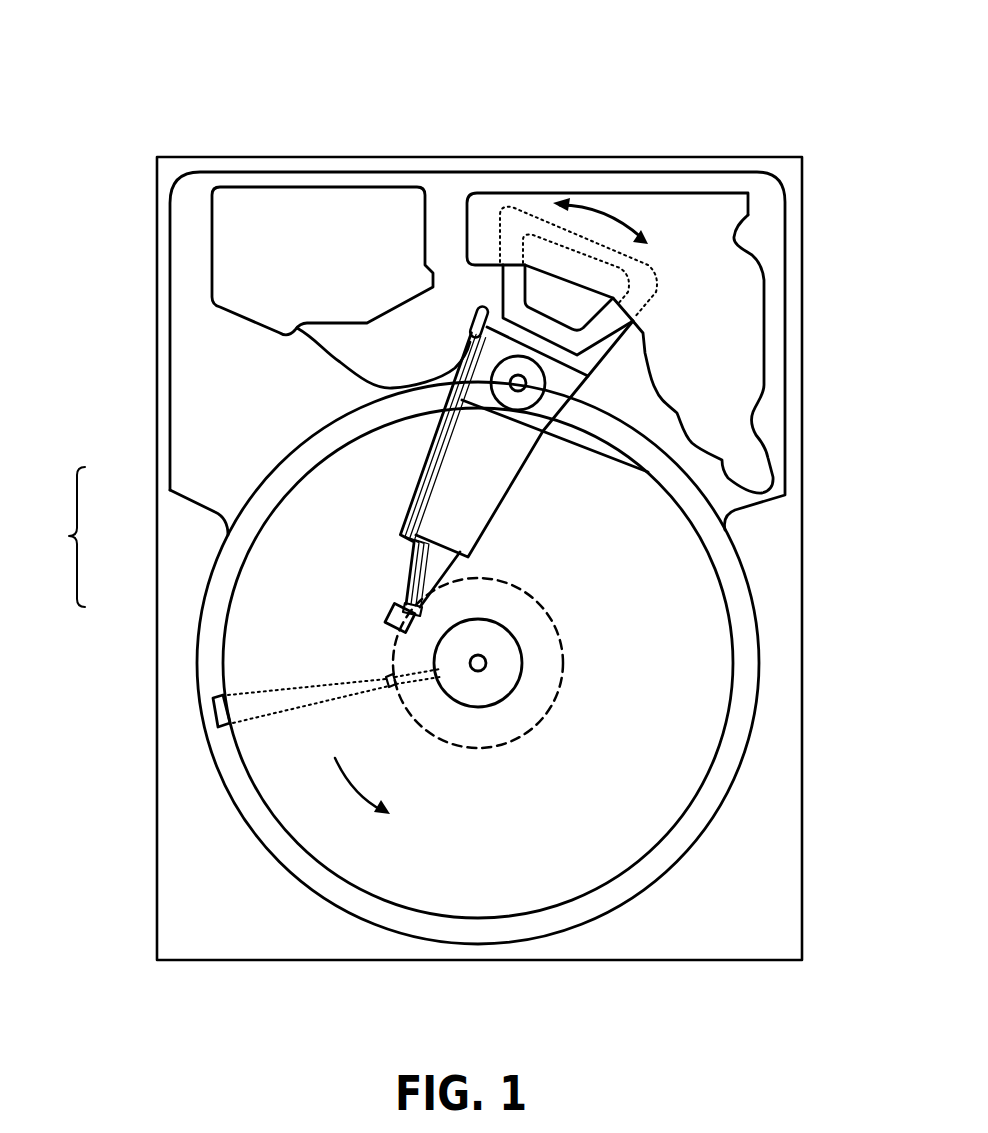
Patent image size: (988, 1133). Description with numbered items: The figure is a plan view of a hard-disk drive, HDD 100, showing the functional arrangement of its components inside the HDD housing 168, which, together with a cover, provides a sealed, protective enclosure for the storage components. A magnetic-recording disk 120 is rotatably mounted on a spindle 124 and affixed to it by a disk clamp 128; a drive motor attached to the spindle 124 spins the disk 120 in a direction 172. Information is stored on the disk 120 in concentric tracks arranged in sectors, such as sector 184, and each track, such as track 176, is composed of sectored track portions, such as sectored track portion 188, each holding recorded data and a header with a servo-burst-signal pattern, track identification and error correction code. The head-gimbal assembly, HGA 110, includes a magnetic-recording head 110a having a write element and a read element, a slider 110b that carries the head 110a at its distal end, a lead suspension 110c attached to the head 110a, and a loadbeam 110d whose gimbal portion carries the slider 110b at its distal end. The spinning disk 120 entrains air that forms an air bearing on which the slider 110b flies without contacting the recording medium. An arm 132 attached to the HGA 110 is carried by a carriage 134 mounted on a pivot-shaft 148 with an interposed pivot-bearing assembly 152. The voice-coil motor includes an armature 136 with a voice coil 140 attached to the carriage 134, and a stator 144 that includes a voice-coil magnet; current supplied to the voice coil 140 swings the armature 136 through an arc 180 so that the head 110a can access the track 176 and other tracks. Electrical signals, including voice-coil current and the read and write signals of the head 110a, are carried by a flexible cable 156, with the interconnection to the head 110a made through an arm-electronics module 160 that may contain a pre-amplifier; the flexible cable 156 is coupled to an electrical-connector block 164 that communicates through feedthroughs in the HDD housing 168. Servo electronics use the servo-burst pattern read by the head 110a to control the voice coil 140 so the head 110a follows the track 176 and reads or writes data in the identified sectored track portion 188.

The HDD 100 is at (124, 89).
The HGA 110 is at (254, 483).
The magnetic-recording head 110a is at (403, 625).
The slider 110b is at (403, 598).
The lead suspension 110c is at (410, 560).
The loadbeam 110d is at (405, 537).
The magnetic-recording disk 120 is at (661, 618).
The spindle 124 is at (487, 663).
The disk clamp 128 is at (508, 685).
The arm 132 is at (470, 500).
The carriage 134 is at (536, 420).
The armature 136 is at (502, 313).
The voice coil 140 is at (511, 277).
The stator 144 is at (731, 286).
The pivot-shaft 148 is at (526, 384).
The pivot-bearing assembly 152 is at (533, 395).
The flexible cable 156 is at (337, 360).
The arm-electronics module 160 is at (470, 350).
The electrical-connector block 164 is at (237, 258).
The HDD housing 168 is at (784, 170).
The direction 172 is at (378, 788).
The track 176 is at (555, 620).
The arc 180 is at (596, 212).
The sector 184 is at (210, 712).
The sectored track portion 188 is at (383, 678).